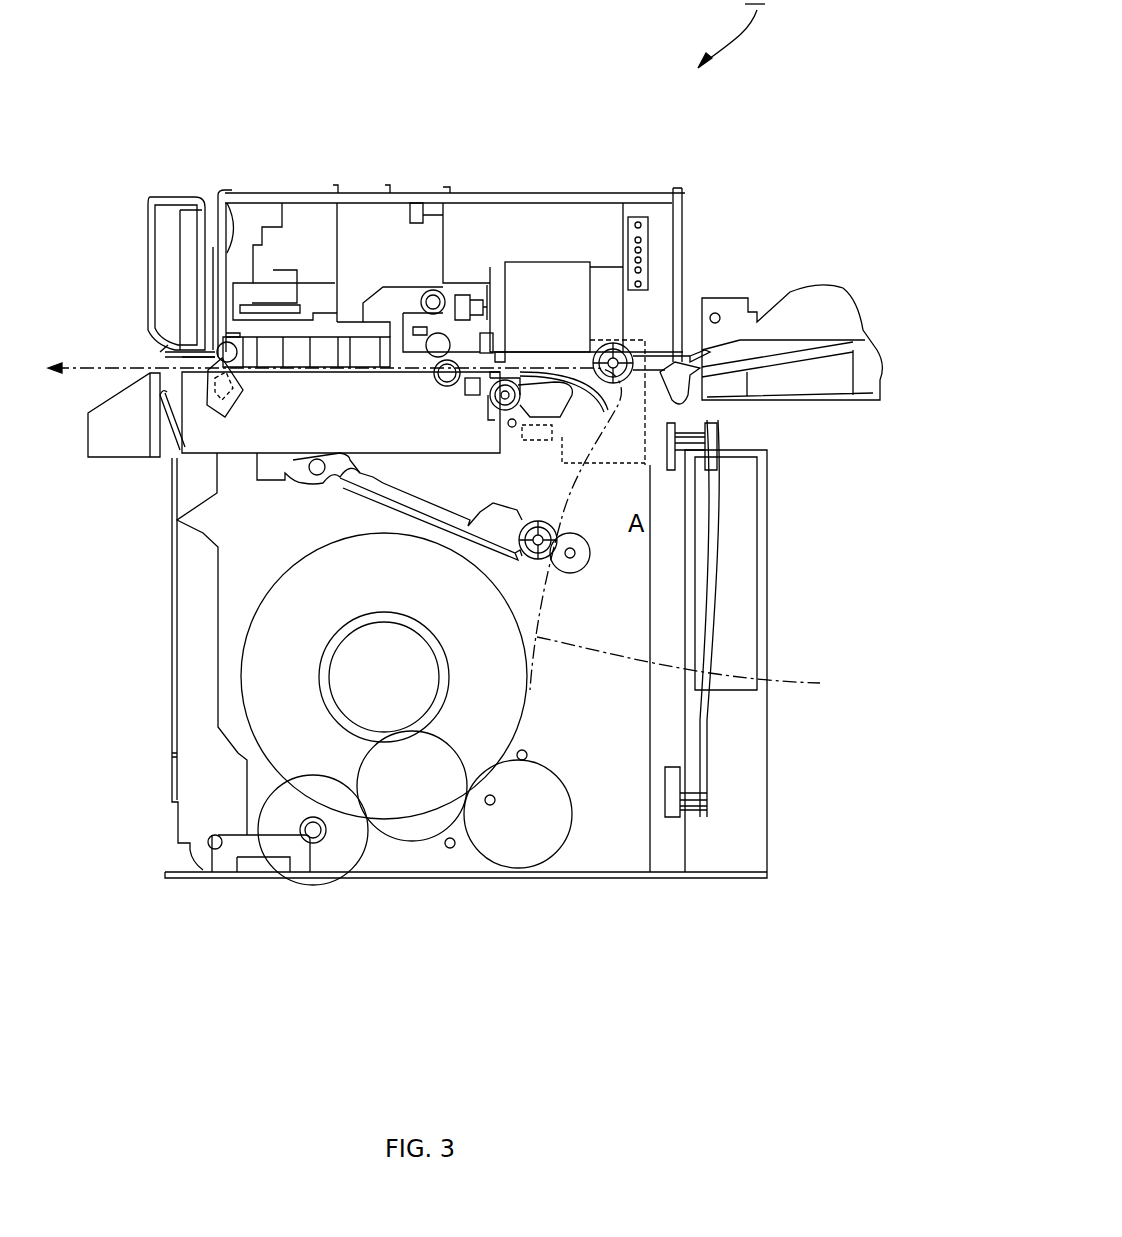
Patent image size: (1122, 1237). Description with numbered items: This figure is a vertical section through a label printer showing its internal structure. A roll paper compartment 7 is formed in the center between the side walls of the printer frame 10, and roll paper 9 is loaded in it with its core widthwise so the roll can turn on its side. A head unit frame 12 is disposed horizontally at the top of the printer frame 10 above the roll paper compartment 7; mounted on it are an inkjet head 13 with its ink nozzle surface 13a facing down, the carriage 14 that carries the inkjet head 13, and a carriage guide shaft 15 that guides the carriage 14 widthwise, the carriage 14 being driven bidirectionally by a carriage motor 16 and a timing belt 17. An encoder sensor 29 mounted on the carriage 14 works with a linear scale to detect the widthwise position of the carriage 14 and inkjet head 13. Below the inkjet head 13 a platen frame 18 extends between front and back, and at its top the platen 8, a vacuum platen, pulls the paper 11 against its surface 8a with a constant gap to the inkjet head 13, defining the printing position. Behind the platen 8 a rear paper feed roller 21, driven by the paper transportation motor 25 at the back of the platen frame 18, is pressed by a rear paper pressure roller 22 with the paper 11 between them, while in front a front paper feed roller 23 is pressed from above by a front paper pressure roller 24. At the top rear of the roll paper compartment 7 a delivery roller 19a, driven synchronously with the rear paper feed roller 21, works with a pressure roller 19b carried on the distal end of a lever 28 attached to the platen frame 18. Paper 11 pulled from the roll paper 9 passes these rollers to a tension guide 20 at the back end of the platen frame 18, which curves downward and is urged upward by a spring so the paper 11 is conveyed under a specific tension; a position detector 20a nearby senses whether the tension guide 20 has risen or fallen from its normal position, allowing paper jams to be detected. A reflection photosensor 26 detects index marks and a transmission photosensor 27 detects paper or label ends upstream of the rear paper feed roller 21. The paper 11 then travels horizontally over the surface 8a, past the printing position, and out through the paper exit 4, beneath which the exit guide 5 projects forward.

The paper exit 4 is at (175, 352).
The exit guide 5 is at (125, 448).
The roll paper compartment 7 is at (260, 702).
The platen 8 is at (238, 462).
The surface of the platen 8a is at (285, 440).
The roll paper 9 is at (265, 762).
The printer frame 10 is at (775, 835).
The paper 11 is at (697, 667).
The head unit frame 12 is at (695, 198).
The inkjet head 13 is at (304, 252).
The ink nozzle surface 13a is at (322, 360).
The carriage 14 is at (377, 305).
The carriage guide shaft 15 is at (432, 296).
The carriage motor 16 is at (553, 268).
The timing belt 17 is at (468, 300).
The platen frame 18 is at (192, 570).
The delivery roller 19a is at (590, 552).
The pressure roller 19b is at (540, 565).
The tension guide 20 is at (583, 407).
The position detector 20a is at (527, 440).
The rear paper feed roller 21 is at (445, 378).
The rear paper pressure roller 22 is at (433, 348).
The front paper feed roller 23 is at (212, 414).
The front paper pressure roller 24 is at (220, 345).
The paper transportation motor 25 is at (612, 435).
The reflection photosensor 26 is at (468, 397).
The transmission photosensor 27 is at (500, 365).
The lever 28 is at (480, 507).
The encoder sensor 29 is at (422, 210).